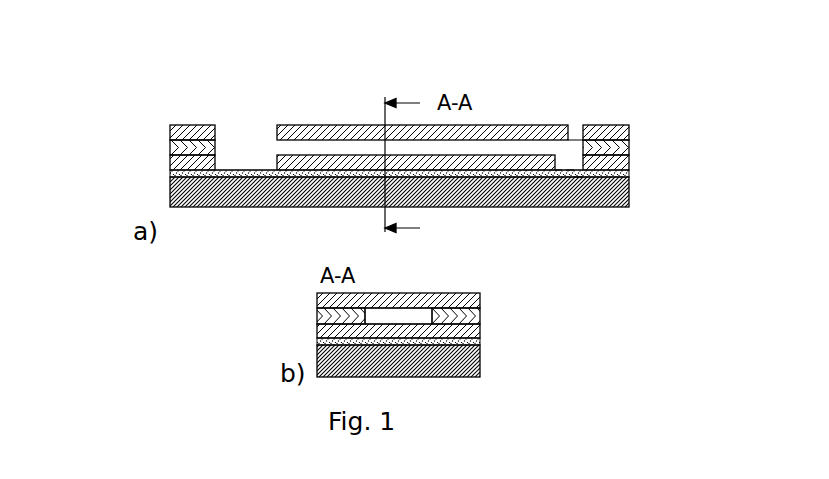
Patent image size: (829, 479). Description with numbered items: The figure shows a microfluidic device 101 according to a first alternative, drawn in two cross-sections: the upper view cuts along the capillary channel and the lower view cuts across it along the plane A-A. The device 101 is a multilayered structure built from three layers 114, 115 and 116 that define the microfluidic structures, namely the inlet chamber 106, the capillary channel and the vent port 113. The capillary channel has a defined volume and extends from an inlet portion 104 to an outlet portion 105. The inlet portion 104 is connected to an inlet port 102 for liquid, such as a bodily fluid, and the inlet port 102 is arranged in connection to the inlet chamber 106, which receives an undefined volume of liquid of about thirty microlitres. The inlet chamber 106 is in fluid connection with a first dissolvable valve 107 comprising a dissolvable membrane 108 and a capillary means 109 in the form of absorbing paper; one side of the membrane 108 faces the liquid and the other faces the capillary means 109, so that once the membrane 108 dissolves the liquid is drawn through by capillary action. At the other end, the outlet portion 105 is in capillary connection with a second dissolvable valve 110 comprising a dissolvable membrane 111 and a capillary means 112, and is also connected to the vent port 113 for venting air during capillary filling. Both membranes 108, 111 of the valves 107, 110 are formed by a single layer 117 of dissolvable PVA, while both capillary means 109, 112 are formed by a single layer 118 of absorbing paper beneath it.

The microfluidic device 101 is at (130, 87).
The inlet port 102 is at (230, 135).
The inlet portion 104 is at (285, 150).
The outlet portion 105 is at (547, 147).
The inlet chamber 106 is at (245, 152).
The first dissolvable valve 107 is at (215, 175).
The dissolvable membrane 108 is at (253, 165).
The capillary means 109 is at (233, 180).
The second dissolvable valve 110 is at (572, 173).
The dissolvable membrane 111 is at (562, 172).
The capillary means 112 is at (577, 177).
The vent port 113 is at (579, 118).
The layer 114 is at (628, 130).
The layer 115 is at (628, 147).
The layer 116 is at (628, 162).
The layer of dissolvable PVA 117 is at (628, 172).
The layer of absorbing paper 118 is at (628, 195).